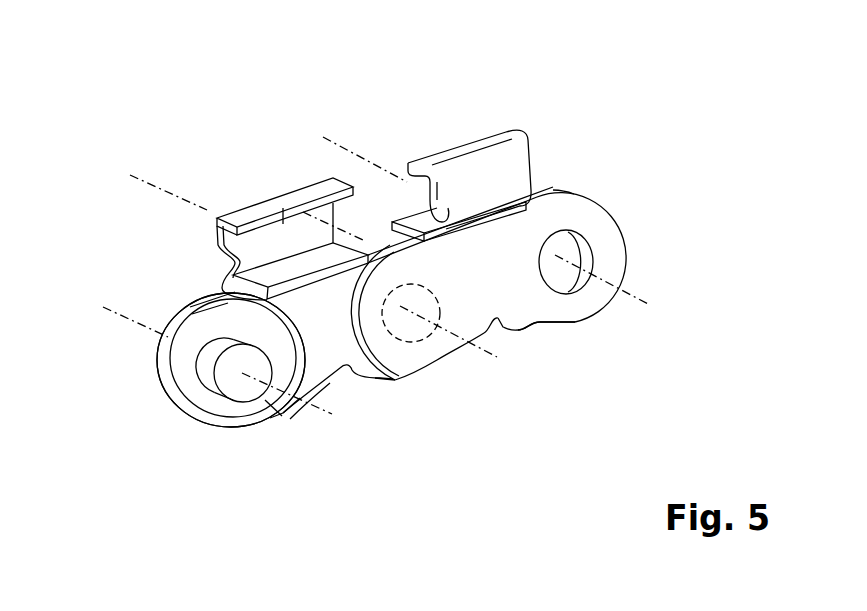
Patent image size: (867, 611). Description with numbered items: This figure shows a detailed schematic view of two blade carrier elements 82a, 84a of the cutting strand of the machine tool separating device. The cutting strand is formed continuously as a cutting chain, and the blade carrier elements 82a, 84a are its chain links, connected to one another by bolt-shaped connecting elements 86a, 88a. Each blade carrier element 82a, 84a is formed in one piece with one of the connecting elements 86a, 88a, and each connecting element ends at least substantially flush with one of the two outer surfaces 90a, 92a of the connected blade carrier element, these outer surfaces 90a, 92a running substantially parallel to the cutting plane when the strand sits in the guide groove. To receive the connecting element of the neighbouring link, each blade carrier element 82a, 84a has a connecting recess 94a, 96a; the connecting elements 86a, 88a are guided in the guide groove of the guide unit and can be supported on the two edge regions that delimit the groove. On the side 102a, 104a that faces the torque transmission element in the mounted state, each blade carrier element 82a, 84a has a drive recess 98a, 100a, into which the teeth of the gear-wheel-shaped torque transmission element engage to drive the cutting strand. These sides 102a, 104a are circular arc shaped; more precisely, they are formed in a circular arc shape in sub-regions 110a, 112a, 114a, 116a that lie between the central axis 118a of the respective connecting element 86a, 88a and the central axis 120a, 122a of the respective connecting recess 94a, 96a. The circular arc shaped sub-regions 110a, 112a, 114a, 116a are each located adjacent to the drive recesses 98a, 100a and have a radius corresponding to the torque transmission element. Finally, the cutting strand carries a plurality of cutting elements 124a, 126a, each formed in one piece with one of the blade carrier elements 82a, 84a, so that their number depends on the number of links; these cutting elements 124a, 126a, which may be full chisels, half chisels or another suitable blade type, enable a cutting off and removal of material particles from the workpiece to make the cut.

The blade carrier element 82a is at (195, 340).
The blade carrier element 84a is at (576, 209).
The connecting element 86a is at (230, 390).
The connecting element 88a is at (292, 195).
The outer surface 90a is at (503, 252).
The outer surface 92a is at (152, 380).
The connecting recess 94a is at (407, 280).
The connecting recess 96a is at (587, 255).
The drive recess 98a is at (352, 378).
The drive recess 100a is at (536, 336).
The side 102a is at (277, 428).
The side 104a is at (560, 340).
The circular arc shaped sub-region 110a is at (294, 428).
The circular arc shaped sub-region 112a is at (387, 390).
The circular arc shaped sub-region 114a is at (477, 357).
The circular arc shaped sub-region 116a is at (560, 337).
The central axis 118a is at (116, 310).
The central axis 120a is at (147, 177).
The central axis 122a is at (337, 142).
The cutting element 124a is at (247, 215).
The cutting element 126a is at (440, 148).